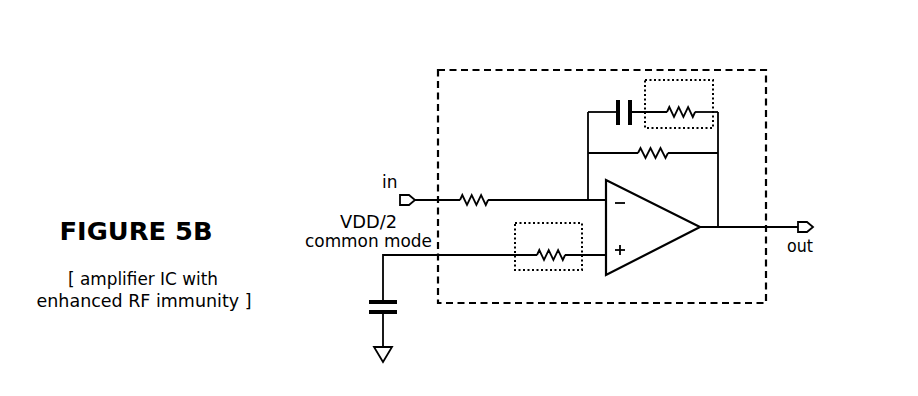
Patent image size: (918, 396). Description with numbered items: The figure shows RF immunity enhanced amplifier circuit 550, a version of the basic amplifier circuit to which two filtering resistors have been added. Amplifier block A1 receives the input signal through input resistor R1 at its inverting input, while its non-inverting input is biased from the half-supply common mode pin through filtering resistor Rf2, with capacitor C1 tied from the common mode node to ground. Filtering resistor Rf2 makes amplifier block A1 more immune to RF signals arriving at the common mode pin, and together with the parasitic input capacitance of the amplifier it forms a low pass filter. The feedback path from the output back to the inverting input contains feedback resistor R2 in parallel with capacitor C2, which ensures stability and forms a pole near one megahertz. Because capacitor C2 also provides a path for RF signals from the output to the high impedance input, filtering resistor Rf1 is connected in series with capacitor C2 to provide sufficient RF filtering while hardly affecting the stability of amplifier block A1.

The enhanced amplifier circuit 550 is at (482, 102).
The input resistor R1 is at (474, 188).
The feedback resistor R2 is at (657, 167).
The filtering resistor Rf1 is at (679, 104).
The filtering resistor Rf2 is at (548, 246).
The capacitor C1 is at (395, 306).
The capacitor C2 is at (606, 106).
The amplifier block A1 is at (658, 233).